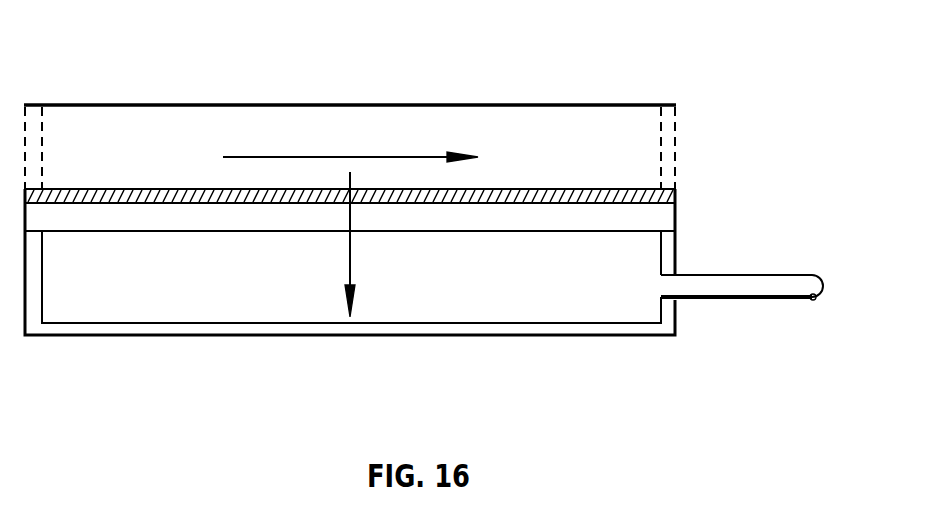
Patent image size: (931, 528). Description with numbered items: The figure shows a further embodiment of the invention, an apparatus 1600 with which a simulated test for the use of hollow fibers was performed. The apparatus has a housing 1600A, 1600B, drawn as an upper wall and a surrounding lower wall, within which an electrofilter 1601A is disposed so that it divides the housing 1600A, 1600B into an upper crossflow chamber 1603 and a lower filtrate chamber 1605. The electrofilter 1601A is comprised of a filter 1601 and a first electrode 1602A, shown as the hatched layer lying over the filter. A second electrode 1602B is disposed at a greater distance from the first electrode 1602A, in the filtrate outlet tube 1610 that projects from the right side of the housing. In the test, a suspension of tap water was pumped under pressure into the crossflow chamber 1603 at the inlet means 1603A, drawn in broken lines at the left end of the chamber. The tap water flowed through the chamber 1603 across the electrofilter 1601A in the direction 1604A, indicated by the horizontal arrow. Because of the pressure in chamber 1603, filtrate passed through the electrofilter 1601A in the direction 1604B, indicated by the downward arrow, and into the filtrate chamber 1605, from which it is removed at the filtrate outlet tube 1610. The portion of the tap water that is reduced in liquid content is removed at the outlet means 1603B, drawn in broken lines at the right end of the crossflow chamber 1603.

The apparatus 1600 is at (502, 103).
The housing 1600A is at (632, 105).
The housing 1600B is at (667, 262).
The filter 1601 is at (648, 213).
The electrofilter 1601A is at (598, 188).
The first electrode 1602A is at (655, 194).
The second electrode 1602B is at (762, 300).
The crossflow chamber 1603 is at (586, 161).
The inlet means 1603A is at (44, 140).
The outlet means 1603B is at (667, 130).
The direction of crossflow 1604A is at (275, 157).
The direction of filtrate flow 1604B is at (350, 269).
The filtrate chamber 1605 is at (590, 281).
The filtrate outlet tube 1610 is at (743, 273).